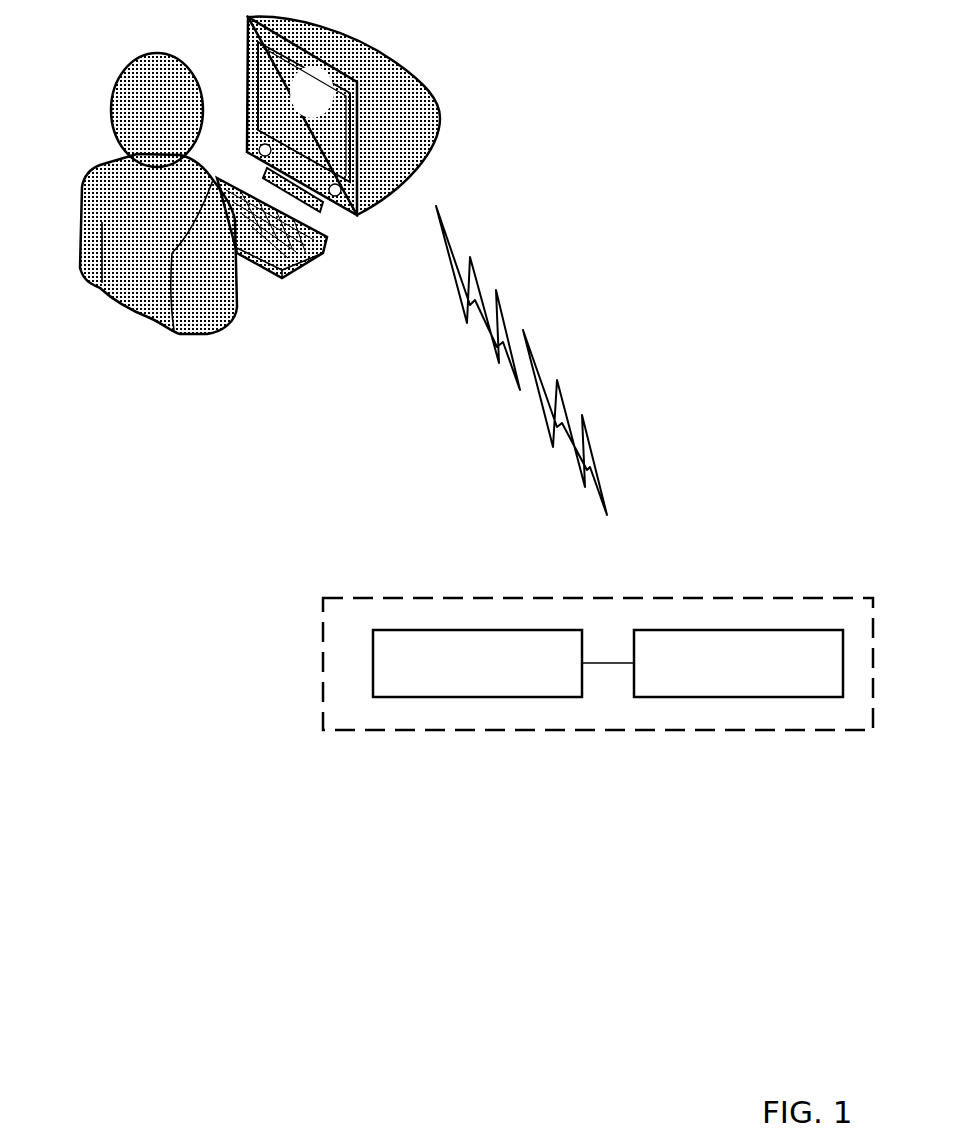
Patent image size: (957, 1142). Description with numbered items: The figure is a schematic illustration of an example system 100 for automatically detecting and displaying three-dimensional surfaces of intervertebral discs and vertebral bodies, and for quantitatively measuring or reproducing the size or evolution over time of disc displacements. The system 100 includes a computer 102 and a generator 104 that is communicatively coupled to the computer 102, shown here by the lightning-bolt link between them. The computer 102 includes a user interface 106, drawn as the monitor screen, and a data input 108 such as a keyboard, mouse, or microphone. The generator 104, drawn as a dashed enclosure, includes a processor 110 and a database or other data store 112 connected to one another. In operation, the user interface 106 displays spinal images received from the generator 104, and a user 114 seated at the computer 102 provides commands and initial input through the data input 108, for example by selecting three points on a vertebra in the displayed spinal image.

The system 100 is at (558, 60).
The computer 102 is at (321, 116).
The generator 104 is at (577, 622).
The user interface 106 is at (265, 57).
The data input 108 is at (313, 263).
The processor 110 is at (373, 647).
The database 112 is at (665, 630).
The user 114 is at (100, 190).